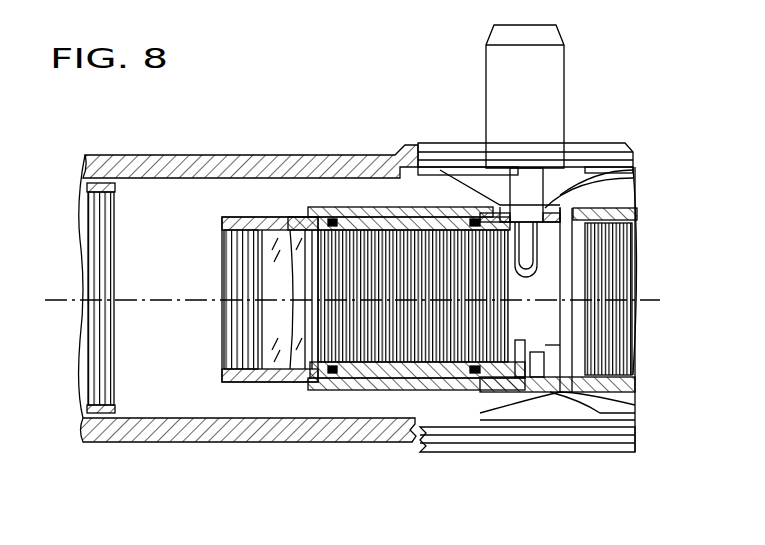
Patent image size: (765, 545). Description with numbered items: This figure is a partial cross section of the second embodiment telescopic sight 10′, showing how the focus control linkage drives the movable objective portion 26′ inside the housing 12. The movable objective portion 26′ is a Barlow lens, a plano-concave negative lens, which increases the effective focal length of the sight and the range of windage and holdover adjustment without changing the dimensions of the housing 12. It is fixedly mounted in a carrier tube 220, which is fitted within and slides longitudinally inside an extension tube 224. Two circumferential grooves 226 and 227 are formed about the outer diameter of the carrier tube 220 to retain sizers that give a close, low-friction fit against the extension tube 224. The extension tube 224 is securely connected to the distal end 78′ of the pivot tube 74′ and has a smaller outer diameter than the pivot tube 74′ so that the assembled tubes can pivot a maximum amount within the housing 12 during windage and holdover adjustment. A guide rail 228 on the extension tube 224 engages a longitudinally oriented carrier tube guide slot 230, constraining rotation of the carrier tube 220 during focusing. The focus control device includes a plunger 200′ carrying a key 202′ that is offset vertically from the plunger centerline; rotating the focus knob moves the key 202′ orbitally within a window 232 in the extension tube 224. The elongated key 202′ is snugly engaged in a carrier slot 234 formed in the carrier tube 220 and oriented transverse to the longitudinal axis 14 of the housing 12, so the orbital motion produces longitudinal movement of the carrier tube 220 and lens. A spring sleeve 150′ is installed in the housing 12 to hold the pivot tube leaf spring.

The telescopic sight 10′ is at (325, 88).
The housing 12 is at (150, 160).
The longitudinal axis 14 is at (655, 300).
The movable objective portion 26′ is at (282, 222).
The pivot tube 74′ is at (618, 210).
The distal end 78′ is at (628, 200).
The spring sleeve 150′ is at (115, 412).
The plunger 200′ is at (555, 60).
The key 202′ is at (540, 185).
The carrier tube 220 is at (378, 215).
The extension tube 224 is at (396, 386).
The circumferential groove 226 is at (332, 212).
The circumferential groove 227 is at (446, 212).
The guide rail 228 is at (536, 350).
The carrier tube guide slot 230 is at (676, 409).
The window 232 is at (500, 207).
The carrier slot 234 is at (542, 278).